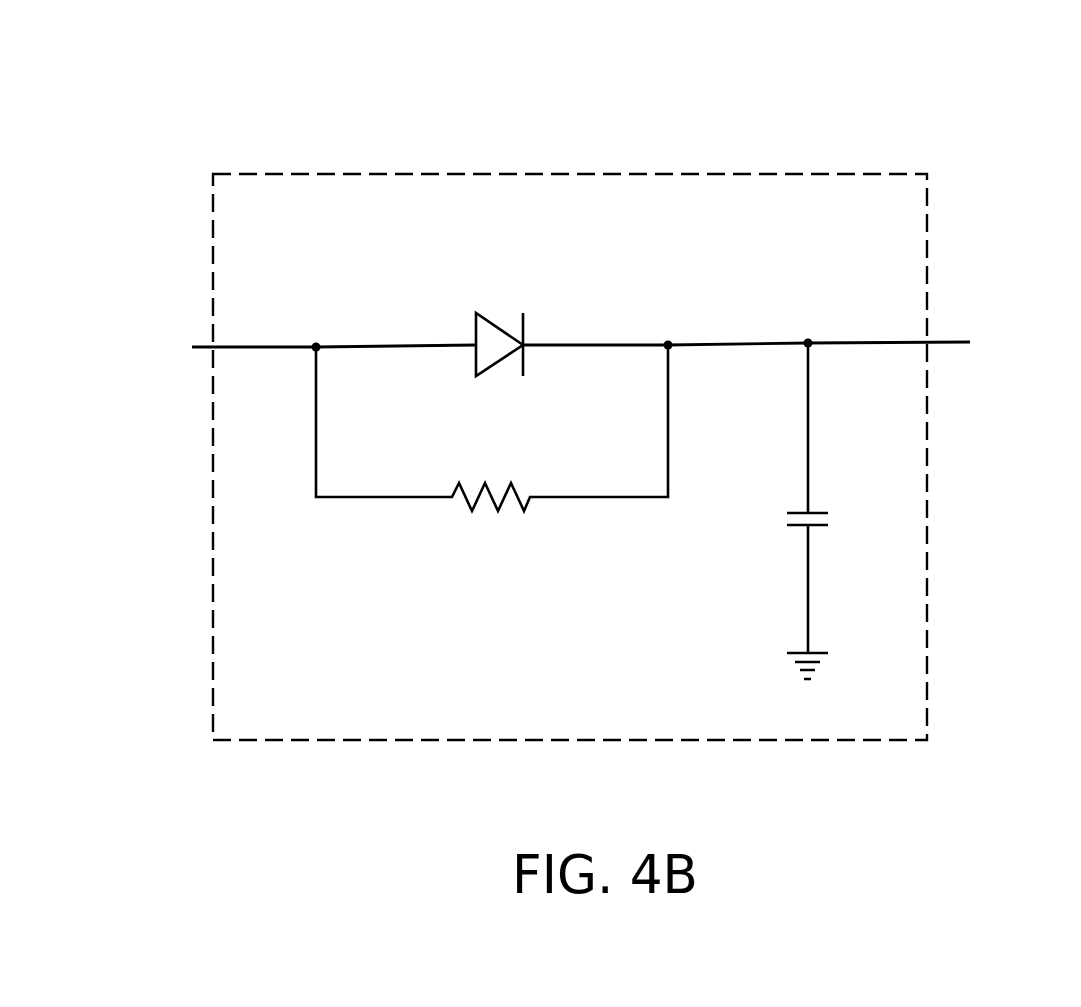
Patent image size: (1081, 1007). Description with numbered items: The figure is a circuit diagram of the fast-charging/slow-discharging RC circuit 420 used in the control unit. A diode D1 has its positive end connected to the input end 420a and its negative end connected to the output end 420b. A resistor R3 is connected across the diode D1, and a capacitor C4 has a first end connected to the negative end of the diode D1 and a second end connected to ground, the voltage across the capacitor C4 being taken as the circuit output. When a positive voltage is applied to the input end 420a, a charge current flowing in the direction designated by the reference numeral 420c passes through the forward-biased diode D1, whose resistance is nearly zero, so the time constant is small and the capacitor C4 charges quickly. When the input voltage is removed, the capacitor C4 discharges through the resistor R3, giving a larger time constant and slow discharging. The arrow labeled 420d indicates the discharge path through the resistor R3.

The fast-charging/slow-discharging RC circuit 420 is at (608, 170).
The input end 420a is at (197, 350).
The output end 420b is at (943, 340).
The charge current direction 420c is at (877, 448).
The parallel diode-resistor network 420d is at (419, 462).
The diode D1 is at (505, 315).
The resistor R3 is at (492, 428).
The capacitor C4 is at (843, 511).